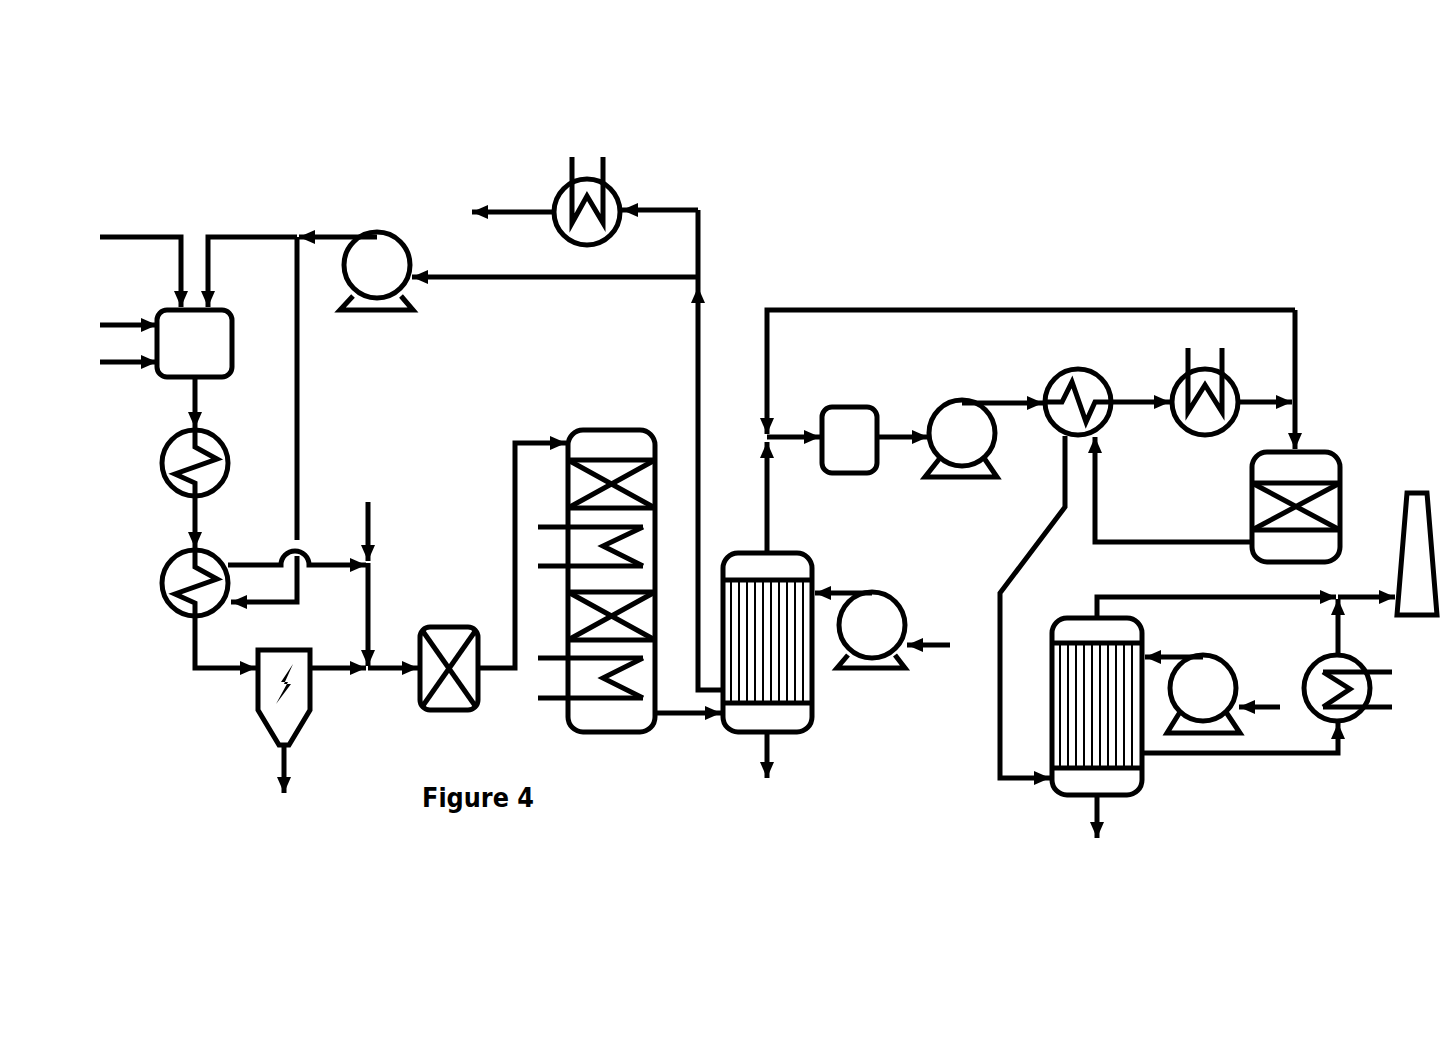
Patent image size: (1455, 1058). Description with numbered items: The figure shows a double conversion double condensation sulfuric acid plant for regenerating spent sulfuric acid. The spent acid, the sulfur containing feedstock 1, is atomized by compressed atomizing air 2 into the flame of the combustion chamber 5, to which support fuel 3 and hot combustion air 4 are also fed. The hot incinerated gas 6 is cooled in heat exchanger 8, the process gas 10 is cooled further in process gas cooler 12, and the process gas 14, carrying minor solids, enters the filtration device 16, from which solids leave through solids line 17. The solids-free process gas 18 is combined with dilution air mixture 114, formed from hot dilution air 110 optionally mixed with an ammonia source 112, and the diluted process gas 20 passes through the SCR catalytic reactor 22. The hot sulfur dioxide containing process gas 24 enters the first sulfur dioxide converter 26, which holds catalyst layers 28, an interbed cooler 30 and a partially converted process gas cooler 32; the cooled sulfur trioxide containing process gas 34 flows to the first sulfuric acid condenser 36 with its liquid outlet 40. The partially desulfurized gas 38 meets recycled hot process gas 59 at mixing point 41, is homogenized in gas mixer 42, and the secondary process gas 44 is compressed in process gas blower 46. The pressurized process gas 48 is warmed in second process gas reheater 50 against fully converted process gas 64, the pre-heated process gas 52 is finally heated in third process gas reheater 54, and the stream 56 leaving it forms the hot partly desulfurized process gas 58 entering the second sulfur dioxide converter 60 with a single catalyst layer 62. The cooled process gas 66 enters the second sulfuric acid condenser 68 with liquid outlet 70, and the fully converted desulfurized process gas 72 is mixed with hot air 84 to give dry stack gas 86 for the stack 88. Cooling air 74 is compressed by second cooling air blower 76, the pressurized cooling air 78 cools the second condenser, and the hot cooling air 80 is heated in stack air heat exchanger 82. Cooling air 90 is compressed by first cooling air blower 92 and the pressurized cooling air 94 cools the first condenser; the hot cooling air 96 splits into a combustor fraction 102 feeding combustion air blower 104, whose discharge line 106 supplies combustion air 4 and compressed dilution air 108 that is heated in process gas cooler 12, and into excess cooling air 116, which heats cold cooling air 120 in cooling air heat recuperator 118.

The sulfur containing feedstock 1 is at (140, 272).
The compressed atomizing air 2 is at (128, 306).
The support fuel 3 is at (128, 380).
The combustion air 4 is at (252, 272).
The combustion chamber 5 is at (204, 343).
The hot incinerated gas 6 is at (176, 401).
The heat exchanger 8 is at (178, 463).
The process gas 10 is at (176, 522).
The process gas cooler 12 is at (177, 583).
The process gas 14 is at (225, 659).
The filtration device 16 is at (270, 697).
The solids line 17 is at (287, 785).
The solids-free process gas 18 is at (338, 685).
The diluted process gas 20 is at (393, 685).
The SCR catalytic reactor 22 is at (449, 685).
The hot SO2 containing process gas 24 is at (522, 537).
The first SO2 converter 26 is at (615, 563).
The catalyst layer 28 is at (591, 550).
The interbed cooler 30 is at (585, 546).
The partially converted process gas cooler 32 is at (585, 678).
The cooled SO3 containing process gas 34 is at (688, 732).
The first sulfuric acid condenser 36 is at (779, 655).
The partially desulfurized gas 38 is at (786, 497).
The liquid outlet of the first condenser 40 is at (767, 772).
The mixing point 41 is at (793, 456).
The gas mixer 42 is at (849, 455).
The secondary process gas 44 is at (902, 454).
The process gas blower 46 is at (961, 453).
The pressurized process gas 48 is at (1002, 416).
The second process gas reheater 50 is at (1078, 384).
The pre-heated process gas 52 is at (1140, 417).
The third process gas reheater 54 is at (1213, 383).
The stream 56 is at (1265, 417).
The hot partly desulfurized process gas 58 is at (1314, 379).
The recycled hot process gas 59 is at (1031, 372).
The second SO2 converter 60 is at (1277, 506).
The catalyst layer 62 is at (1312, 506).
The fully converted process gas 64 is at (1173, 489).
The cooled process gas 66 is at (1031, 625).
The second sulfuric acid condenser 68 is at (1107, 723).
The liquid outlet of the second condenser 70 is at (1095, 833).
The fully converted desulfurized process gas 72 is at (1214, 590).
The cooling air for the second sulfuric acid condenser 74 is at (1259, 688).
The second cooling air blower 76 is at (1211, 680).
The pressurized cooling air for second sulfuric acid condenser 78 is at (1174, 637).
The hot cooling air from second condenser 80 is at (1240, 755).
The stack air heat exchanger 82 is at (1353, 688).
The hot air 84 is at (1356, 627).
The stack gas 86 is at (1366, 579).
The stack 88 is at (1417, 535).
The cooling air for first sulfuric acid condenser 90 is at (928, 661).
The first cooling air blower 92 is at (881, 617).
The pressurized cooling air for first sulfuric acid condenser 94 is at (843, 574).
The hot cooling air 96 is at (715, 450).
The combustor fraction of the cooling air 102 is at (555, 294).
The combustion air blower 104 is at (386, 255).
The stream 106 is at (338, 218).
The compressed dilution air 108 is at (288, 419).
The hot dilution air 110 is at (297, 547).
The NH3 source 112 is at (393, 531).
The dilution air mixture 114 is at (393, 614).
The excess cooling air 116 is at (660, 191).
The cooling air heat recuperator 118 is at (587, 186).
The cold cooling air 120 is at (513, 192).